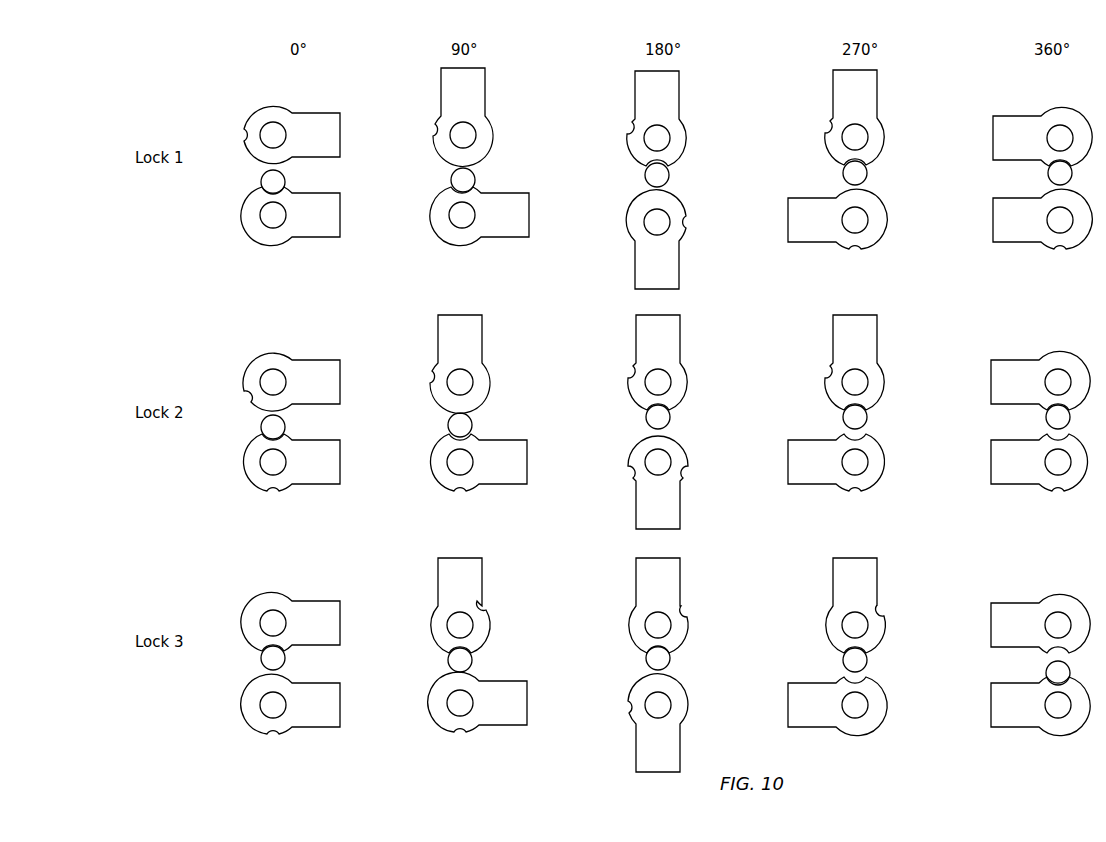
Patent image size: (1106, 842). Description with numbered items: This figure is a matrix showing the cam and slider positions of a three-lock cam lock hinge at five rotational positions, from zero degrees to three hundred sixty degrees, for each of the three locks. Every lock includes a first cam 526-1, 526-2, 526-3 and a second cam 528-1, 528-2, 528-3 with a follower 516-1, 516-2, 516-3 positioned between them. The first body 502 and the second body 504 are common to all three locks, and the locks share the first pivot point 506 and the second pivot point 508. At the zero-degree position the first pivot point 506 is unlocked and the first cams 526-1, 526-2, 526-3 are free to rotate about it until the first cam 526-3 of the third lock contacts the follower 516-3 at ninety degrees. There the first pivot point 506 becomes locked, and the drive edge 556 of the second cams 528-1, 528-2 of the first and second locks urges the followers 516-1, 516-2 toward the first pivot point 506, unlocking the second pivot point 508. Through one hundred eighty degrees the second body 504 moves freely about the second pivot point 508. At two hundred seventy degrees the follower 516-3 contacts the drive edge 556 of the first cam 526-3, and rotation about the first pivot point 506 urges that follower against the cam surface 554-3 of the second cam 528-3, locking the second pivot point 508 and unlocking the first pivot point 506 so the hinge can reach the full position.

The first body 502 is at (316, 125).
The second body 504 is at (318, 222).
The first pivot point 506 is at (267, 135).
The second pivot point 508 is at (268, 215).
The follower 516-1 is at (270, 180).
The follower 516-2 is at (271, 427).
The follower 516-3 is at (268, 658).
The first cam 526-1 is at (249, 153).
The first cam 526-2 is at (258, 398).
The first cam 526-3 is at (270, 600).
The second cam 528-1 is at (268, 238).
The second cam 528-2 is at (250, 468).
The second cam 528-3 is at (250, 710).
The cam surface 554-3 is at (862, 683).
The drive edge 556 is at (443, 194).